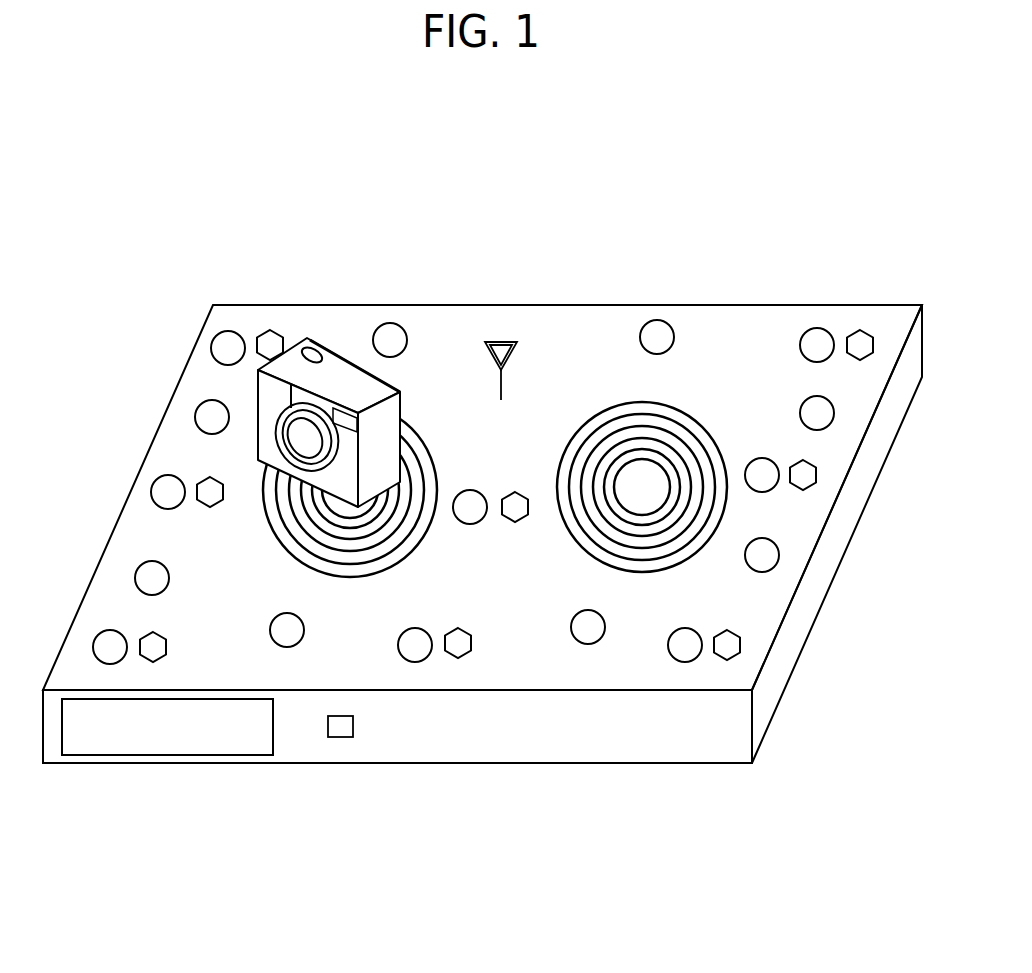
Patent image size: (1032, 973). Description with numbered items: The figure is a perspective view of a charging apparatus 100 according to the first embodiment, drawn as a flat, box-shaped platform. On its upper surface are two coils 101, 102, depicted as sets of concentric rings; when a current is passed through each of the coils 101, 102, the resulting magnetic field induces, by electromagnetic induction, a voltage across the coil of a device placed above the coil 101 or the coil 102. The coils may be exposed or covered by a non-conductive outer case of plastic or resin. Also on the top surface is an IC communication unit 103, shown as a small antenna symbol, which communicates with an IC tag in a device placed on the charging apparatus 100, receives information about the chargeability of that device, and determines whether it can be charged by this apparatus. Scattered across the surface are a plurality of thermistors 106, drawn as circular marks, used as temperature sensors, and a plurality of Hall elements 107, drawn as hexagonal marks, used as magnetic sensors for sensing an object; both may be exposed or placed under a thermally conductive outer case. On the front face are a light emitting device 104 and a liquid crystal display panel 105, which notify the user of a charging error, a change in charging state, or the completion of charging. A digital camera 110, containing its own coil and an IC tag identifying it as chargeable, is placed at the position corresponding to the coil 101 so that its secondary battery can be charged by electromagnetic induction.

The charging apparatus 100 is at (188, 236).
The coil 101 is at (273, 518).
The coil 102 is at (702, 422).
The IC communication unit 103 is at (502, 341).
The light emitting device (LED) 104 is at (342, 727).
The liquid crystal display (LCD) panel 105 is at (197, 743).
The thermistor 106 is at (663, 319).
The Hall element 107 is at (867, 333).
The digital camera 110 is at (327, 347).